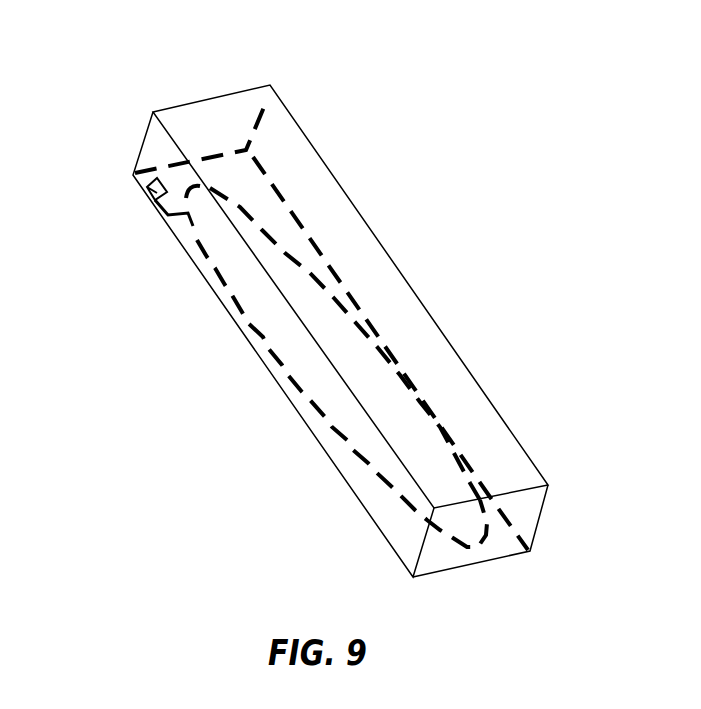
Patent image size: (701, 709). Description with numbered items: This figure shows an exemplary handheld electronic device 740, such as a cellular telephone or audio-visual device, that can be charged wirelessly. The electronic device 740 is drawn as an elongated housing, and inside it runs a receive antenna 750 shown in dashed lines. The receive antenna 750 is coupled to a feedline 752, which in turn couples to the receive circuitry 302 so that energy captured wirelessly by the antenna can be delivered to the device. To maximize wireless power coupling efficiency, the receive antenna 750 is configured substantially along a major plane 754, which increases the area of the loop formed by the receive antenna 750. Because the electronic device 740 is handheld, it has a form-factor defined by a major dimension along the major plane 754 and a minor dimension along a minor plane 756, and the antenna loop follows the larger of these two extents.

The handheld electronic device 740 is at (215, 97).
The receive circuitry 302 is at (140, 185).
The feedline 752 is at (168, 218).
The receive antenna 750 is at (262, 338).
The major plane 754 is at (398, 508).
The minor plane 756 is at (527, 502).